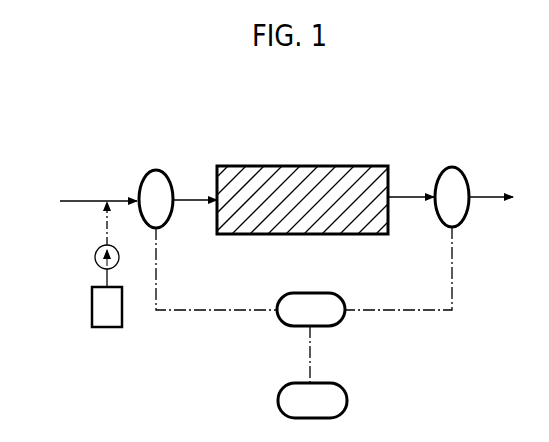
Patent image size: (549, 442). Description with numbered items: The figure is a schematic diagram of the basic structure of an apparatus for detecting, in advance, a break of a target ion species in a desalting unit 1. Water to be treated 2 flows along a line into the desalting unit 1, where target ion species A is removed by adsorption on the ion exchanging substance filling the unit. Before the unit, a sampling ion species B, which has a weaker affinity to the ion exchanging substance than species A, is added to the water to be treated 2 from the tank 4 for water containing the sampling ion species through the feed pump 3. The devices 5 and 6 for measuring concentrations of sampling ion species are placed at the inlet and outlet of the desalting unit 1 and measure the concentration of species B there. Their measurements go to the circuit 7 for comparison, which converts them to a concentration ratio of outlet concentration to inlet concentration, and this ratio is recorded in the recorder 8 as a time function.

The desalting unit 1 is at (307, 166).
The water to be treated 2 is at (73, 199).
The feed pump 3 is at (95, 257).
The tank for water containing a sampling ion species 4 is at (92, 307).
The device for measuring concentration of sampling ion species 5 is at (154, 170).
The device for measuring concentration of sampling ion species 6 is at (447, 167).
The circuit for comparing measurements 7 is at (318, 293).
The recorder 8 is at (330, 383).